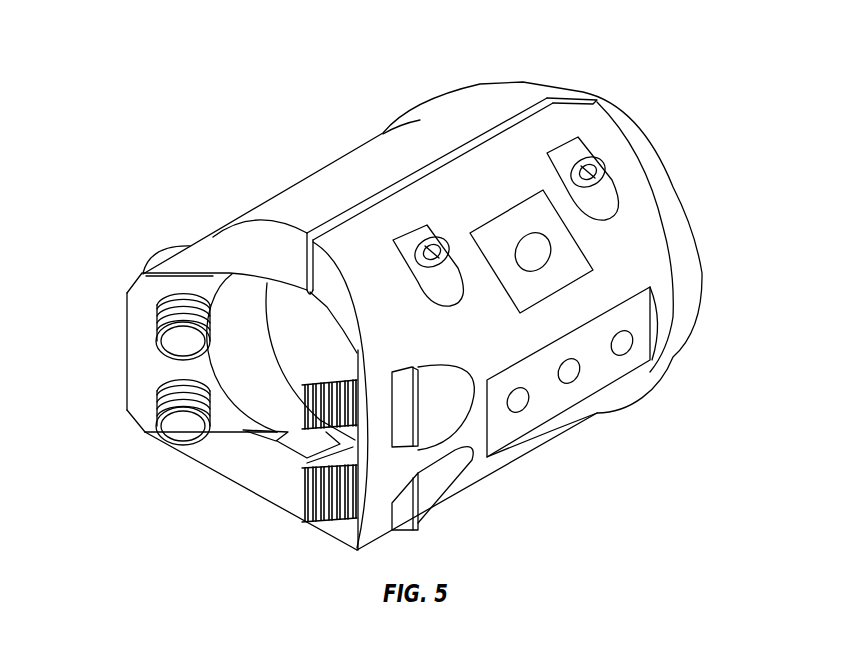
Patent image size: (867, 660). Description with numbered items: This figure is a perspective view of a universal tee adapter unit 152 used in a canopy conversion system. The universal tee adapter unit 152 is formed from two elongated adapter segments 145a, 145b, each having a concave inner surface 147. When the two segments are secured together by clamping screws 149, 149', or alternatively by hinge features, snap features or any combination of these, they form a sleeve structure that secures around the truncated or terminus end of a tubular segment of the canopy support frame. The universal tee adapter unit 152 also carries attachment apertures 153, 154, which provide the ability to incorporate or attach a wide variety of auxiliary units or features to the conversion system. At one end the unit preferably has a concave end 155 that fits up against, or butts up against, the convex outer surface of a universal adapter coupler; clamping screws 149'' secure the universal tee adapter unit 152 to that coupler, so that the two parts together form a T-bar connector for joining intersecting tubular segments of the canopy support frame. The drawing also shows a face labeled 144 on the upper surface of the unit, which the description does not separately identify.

The universal tee adapter unit 152 is at (682, 87).
The elongated adapter segment 145a is at (472, 98).
The elongated adapter segment 145b is at (638, 387).
The upper flat face 144 is at (491, 196).
The concave inner surface 147 is at (256, 369).
The clamping screw 149 is at (624, 172).
The clamping screw 149' is at (410, 265).
The clamping screw 149'' is at (138, 369).
The attachment aperture 153 is at (630, 345).
The attachment aperture 154 is at (540, 250).
The concave end 155 is at (265, 253).